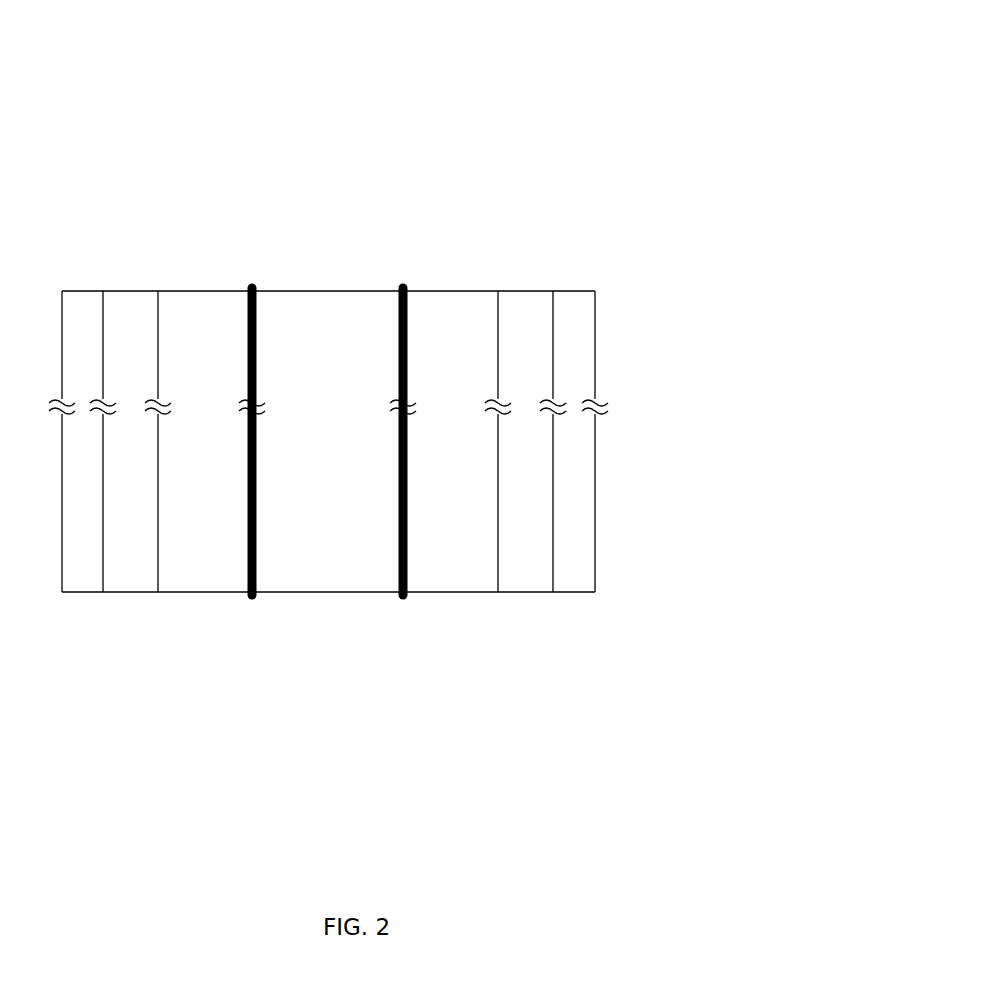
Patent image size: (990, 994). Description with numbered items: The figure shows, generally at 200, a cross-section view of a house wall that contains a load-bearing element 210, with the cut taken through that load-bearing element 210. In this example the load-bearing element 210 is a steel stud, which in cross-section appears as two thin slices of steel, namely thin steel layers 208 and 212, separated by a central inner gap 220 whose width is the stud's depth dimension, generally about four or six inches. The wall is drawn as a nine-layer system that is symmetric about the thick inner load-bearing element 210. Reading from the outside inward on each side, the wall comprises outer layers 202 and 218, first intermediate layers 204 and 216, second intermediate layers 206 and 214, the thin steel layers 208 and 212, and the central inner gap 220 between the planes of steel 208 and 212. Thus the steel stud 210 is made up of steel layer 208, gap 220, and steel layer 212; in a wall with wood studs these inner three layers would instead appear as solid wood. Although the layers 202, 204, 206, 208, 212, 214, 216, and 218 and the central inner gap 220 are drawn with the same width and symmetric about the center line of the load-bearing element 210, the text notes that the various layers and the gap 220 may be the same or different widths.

The house wall cross-section 200 is at (873, 68).
The outer layer 202 is at (62, 628).
The first intermediate layer 204 is at (103, 603).
The second intermediate layer 206 is at (250, 628).
The thin steel layer 208 is at (249, 303).
The load-bearing element 210 is at (405, 602).
The thin steel layer 212 is at (398, 313).
The second intermediate layer 214 is at (498, 628).
The first intermediate layer 216 is at (553, 603).
The outer layer 218 is at (595, 628).
The central inner gap 220 is at (398, 338).